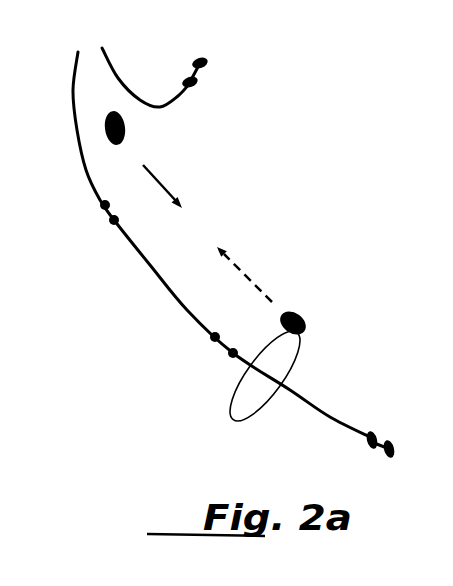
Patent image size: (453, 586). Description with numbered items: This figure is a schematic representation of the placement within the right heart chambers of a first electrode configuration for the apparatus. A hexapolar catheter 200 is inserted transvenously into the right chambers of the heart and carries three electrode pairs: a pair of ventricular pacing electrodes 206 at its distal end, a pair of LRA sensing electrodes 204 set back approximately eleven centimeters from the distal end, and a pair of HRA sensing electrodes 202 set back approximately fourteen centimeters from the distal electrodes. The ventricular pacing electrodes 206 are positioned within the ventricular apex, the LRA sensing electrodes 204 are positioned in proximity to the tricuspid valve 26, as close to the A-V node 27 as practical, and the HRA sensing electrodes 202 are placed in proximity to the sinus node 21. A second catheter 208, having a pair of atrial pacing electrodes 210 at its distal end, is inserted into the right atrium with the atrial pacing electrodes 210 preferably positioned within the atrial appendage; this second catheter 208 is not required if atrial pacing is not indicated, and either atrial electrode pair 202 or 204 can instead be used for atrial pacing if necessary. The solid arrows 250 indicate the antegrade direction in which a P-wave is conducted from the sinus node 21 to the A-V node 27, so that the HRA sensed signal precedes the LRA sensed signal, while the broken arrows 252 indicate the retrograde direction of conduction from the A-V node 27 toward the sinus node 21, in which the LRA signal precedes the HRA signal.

The hexapolar catheter 200 is at (85, 172).
The HRA sensing electrodes 202 is at (102, 212).
The LRA sensing electrodes 204 is at (227, 358).
The ventricular pacing electrodes 206 is at (395, 442).
The second catheter 208 is at (123, 80).
The atrial pacing electrodes 210 is at (198, 82).
The sinus node 21 is at (125, 130).
The solid arrows 250 is at (163, 183).
The broken arrows 252 is at (252, 280).
The A-V node 27 is at (298, 310).
The tricuspid valve 26 is at (230, 408).